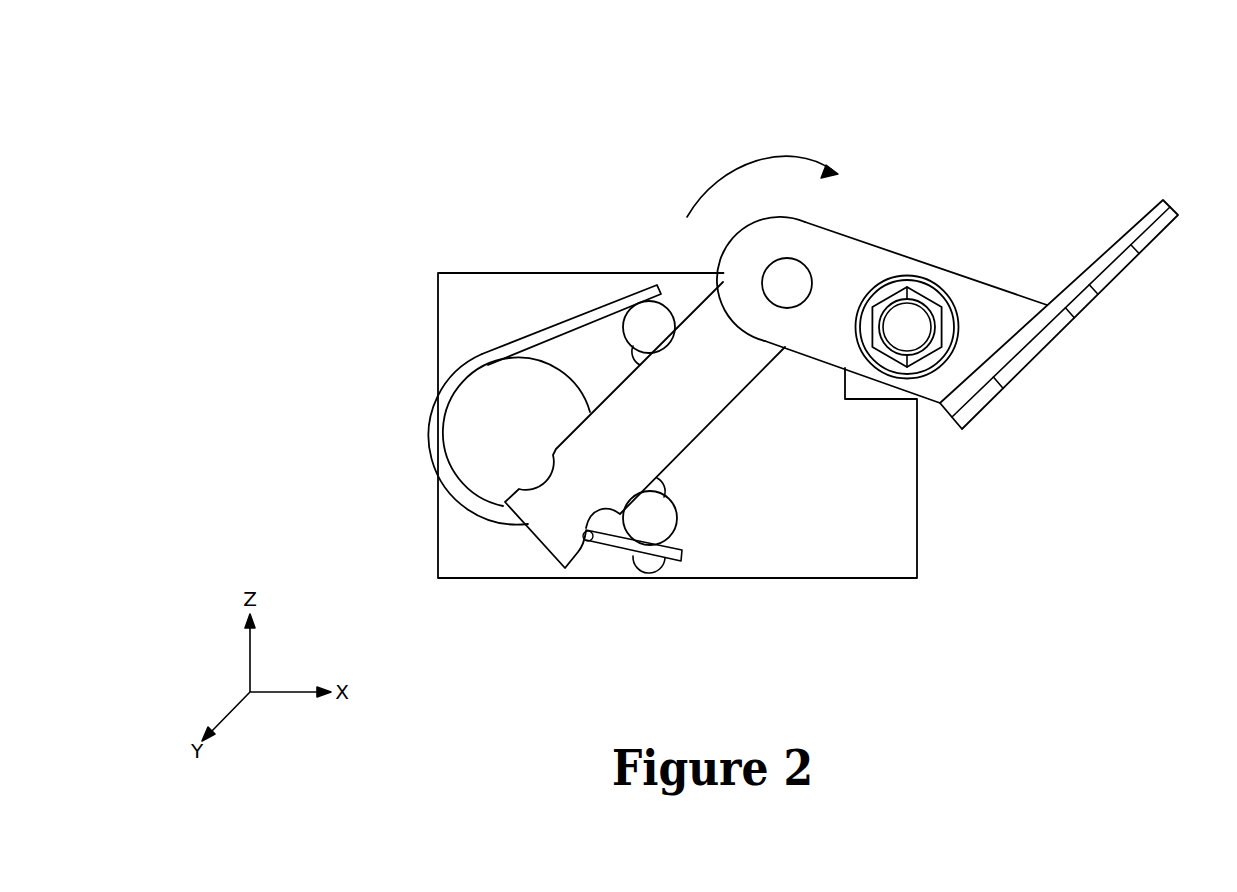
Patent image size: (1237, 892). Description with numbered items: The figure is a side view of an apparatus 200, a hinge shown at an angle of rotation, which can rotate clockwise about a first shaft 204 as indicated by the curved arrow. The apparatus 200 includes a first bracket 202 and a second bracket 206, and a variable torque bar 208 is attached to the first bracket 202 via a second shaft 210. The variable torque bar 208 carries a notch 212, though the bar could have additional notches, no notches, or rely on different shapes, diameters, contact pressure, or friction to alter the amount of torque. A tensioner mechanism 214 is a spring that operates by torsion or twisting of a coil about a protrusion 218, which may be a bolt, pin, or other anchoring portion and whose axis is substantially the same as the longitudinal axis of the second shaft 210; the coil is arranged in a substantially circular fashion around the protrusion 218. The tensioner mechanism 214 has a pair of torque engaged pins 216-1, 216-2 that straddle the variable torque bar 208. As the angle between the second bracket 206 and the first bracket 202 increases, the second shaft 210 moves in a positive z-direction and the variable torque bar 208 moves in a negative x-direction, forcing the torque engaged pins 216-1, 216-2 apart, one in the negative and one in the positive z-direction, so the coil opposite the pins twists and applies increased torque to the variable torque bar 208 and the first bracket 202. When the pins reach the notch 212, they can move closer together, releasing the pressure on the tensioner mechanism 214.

The apparatus 200 is at (477, 125).
The first bracket 202 is at (822, 352).
The first shaft 204 is at (905, 322).
The second bracket 206 is at (495, 272).
The variable torque bar 208 is at (673, 425).
The second shaft 210 is at (787, 283).
The notch 212 is at (585, 535).
The tensioner mechanism 214 is at (453, 497).
The torque engaged pin 216-1 is at (658, 522).
The torque engaged pin 216-2 is at (648, 327).
The protrusion 218 is at (478, 432).